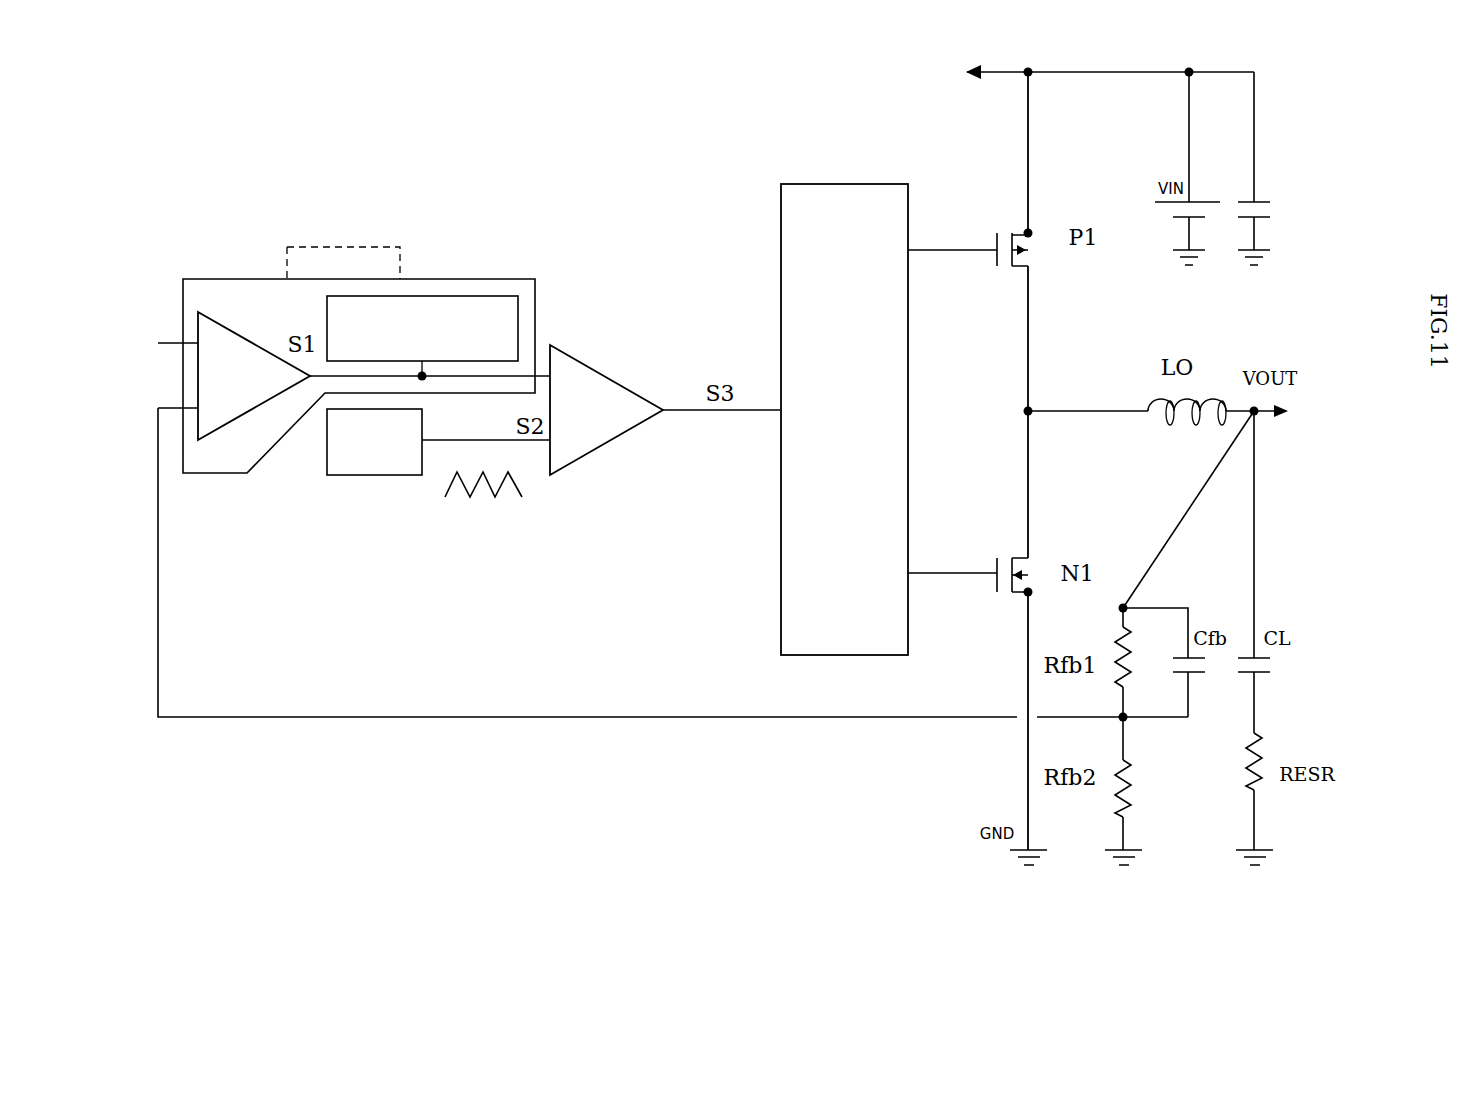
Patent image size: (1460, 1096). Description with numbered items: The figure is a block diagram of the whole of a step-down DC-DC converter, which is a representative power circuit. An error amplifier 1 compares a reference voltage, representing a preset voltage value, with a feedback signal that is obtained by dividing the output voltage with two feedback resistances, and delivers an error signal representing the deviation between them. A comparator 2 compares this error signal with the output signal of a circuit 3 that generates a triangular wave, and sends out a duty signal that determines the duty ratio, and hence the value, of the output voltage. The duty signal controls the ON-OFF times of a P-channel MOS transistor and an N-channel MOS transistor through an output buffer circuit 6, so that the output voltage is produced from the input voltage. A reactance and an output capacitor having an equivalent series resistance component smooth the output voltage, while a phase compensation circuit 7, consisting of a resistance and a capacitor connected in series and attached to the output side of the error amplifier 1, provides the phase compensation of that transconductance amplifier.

The error amplifier 1 is at (242, 328).
The comparator 2 is at (588, 380).
The circuit 3 is at (368, 475).
The output buffer circuit 6 is at (827, 198).
The phase compensation circuit 7 is at (495, 305).